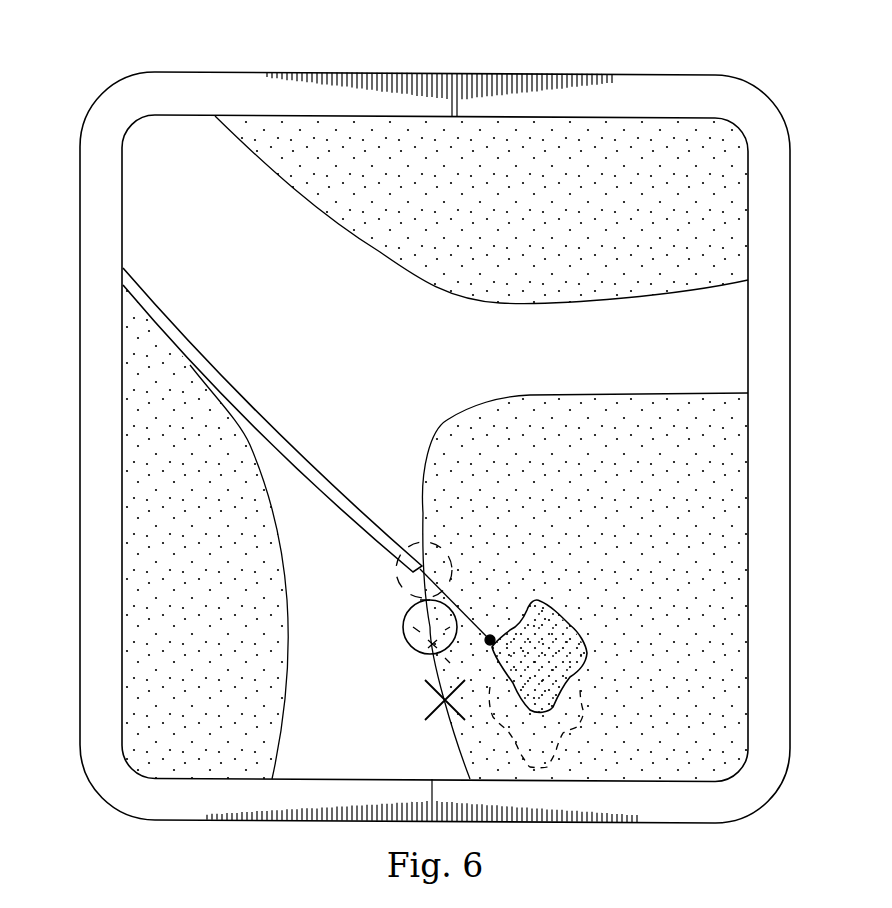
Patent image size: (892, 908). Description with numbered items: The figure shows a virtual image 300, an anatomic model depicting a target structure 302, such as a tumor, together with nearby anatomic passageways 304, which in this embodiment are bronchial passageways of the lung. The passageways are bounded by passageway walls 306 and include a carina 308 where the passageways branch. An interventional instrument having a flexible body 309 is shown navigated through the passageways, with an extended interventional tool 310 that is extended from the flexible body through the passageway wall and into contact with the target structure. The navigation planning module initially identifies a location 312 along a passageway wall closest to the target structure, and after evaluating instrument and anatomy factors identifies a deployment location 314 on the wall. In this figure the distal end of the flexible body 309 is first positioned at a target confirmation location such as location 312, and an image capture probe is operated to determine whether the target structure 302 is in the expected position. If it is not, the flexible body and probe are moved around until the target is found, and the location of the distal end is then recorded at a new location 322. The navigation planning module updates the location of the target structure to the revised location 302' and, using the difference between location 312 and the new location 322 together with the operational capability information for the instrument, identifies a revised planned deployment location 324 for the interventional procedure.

The virtual image 300 is at (647, 103).
The target structure 302 is at (573, 727).
The updated target structure location 302' is at (553, 641).
The anatomic passageways 304 is at (202, 256).
The passageway walls 306 is at (406, 262).
The carina 308 is at (455, 422).
The flexible body 309 is at (262, 418).
The extended interventional tool 310 is at (456, 606).
The location 312 is at (432, 700).
The deployment location 314 is at (404, 630).
The new location 322 is at (420, 661).
The revised planned deployment location 324 is at (448, 572).